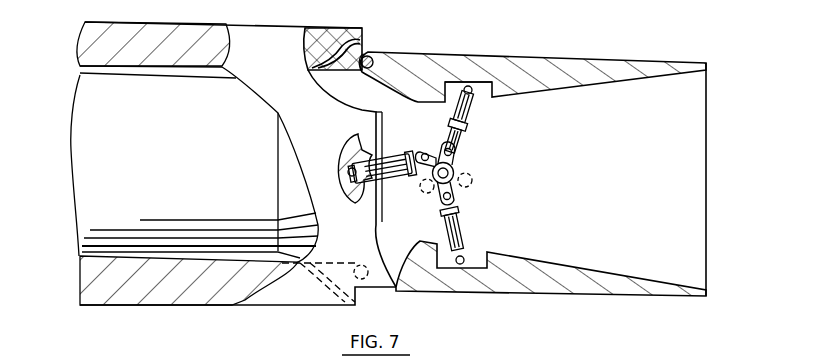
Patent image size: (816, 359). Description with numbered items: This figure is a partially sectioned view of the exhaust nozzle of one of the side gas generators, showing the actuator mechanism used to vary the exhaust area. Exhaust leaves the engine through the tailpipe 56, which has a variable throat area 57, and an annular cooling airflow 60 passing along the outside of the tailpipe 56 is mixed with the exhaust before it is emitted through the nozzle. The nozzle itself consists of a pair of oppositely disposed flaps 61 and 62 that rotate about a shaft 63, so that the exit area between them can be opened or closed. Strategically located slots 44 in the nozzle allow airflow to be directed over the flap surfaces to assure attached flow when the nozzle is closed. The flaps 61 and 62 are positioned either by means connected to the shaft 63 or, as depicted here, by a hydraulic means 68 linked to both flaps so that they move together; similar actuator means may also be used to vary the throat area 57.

The slots 44 is at (352, 44).
The tailpipe 56 is at (194, 165).
The variable throat area 57 is at (378, 148).
The annular cooling airflow 60 is at (118, 71).
The flap 61 is at (565, 68).
The flap 62 is at (542, 283).
The shaft 63 is at (373, 58).
The hydraulic means 68 is at (464, 170).